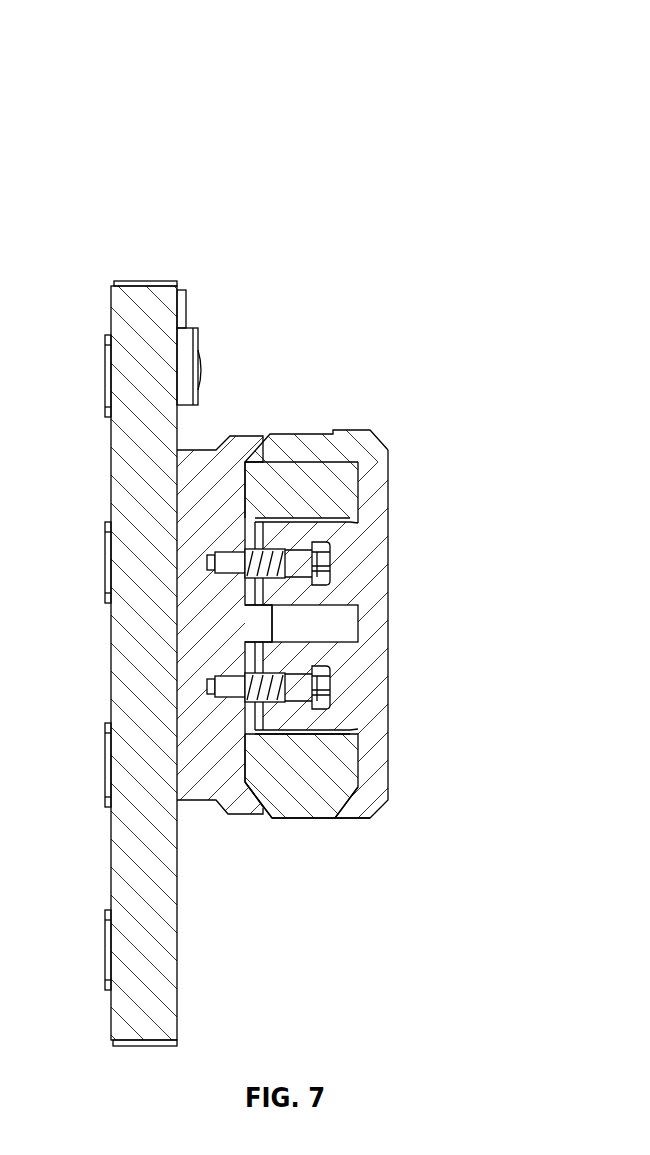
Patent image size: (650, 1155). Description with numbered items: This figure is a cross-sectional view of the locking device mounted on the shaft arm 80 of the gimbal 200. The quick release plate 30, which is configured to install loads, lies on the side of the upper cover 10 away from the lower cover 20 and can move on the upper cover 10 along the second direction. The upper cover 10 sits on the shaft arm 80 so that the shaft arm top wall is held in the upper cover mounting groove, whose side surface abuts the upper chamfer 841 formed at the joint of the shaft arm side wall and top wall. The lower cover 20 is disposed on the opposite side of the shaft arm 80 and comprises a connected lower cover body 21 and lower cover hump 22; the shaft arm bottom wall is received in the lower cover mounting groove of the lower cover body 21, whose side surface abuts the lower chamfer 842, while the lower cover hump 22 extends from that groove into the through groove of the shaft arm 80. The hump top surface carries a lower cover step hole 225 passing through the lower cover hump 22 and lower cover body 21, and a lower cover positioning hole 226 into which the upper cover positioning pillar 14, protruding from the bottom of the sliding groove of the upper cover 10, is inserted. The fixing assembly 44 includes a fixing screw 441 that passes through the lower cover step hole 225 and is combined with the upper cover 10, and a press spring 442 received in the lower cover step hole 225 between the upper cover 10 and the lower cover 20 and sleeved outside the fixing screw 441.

The gimbal 200 is at (231, 48).
The quick release plate 30 is at (144, 297).
The upper cover 10 is at (238, 447).
The upper cover positioning pillar 14 is at (262, 625).
The shaft arm 80 is at (302, 443).
The lower cover 20 is at (489, 491).
The lower cover body 21 is at (370, 495).
The lower cover hump 22 is at (347, 533).
The lower cover step hole 225 is at (282, 578).
The lower cover positioning hole 226 is at (347, 627).
The fixing assembly 44 is at (479, 676).
The fixing screw 441 is at (280, 707).
The press spring 442 is at (292, 675).
The upper chamfer 841 is at (265, 815).
The lower chamfer 842 is at (333, 812).